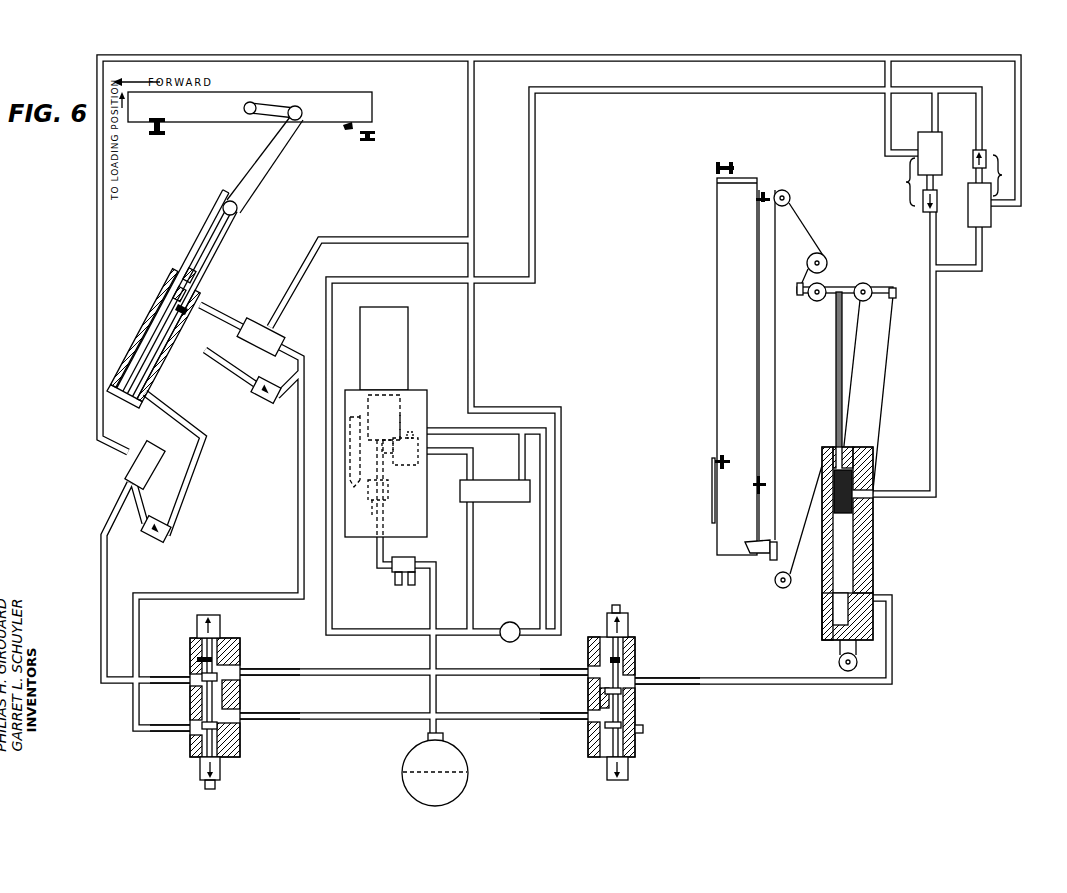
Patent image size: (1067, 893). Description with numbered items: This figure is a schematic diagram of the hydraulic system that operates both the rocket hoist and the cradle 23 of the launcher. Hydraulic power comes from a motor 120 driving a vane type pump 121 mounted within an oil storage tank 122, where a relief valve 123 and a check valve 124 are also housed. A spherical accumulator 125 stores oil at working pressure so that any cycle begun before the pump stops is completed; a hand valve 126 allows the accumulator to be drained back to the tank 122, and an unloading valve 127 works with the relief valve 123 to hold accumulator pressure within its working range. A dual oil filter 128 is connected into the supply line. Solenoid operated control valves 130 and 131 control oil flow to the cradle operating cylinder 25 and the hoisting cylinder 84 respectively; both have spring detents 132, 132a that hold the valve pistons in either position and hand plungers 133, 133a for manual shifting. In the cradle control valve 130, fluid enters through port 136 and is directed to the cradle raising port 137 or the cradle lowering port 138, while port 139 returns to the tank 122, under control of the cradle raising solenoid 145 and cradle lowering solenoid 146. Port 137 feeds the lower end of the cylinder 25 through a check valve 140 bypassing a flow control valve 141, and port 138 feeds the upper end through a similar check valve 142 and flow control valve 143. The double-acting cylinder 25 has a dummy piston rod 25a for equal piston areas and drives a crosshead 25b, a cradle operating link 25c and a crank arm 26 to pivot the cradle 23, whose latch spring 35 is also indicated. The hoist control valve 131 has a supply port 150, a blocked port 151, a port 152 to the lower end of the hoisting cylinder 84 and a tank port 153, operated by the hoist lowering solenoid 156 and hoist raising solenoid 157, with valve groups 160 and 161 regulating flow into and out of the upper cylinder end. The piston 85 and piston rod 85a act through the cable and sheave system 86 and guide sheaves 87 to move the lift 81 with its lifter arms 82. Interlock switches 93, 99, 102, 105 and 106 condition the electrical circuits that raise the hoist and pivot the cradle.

The cradle 23 is at (345, 102).
The cradle operating cylinder 25 is at (172, 276).
The dummy piston rod 25a is at (162, 312).
The crosshead 25b is at (222, 209).
The cradle operating link 25c is at (244, 178).
The crank arm 26 is at (270, 120).
The spring 35 is at (375, 142).
The lift 81 is at (771, 560).
The lifter arms 82 is at (748, 550).
The hoisting cylinder 84 is at (826, 527).
The piston 85 is at (836, 496).
The piston rod 85a is at (836, 405).
The cable and sheave system 86 is at (846, 284).
The guide sheaves 87 is at (791, 195).
The interlock switch 93 is at (722, 455).
The switch 99 is at (765, 482).
The switch 102 is at (765, 194).
The switch 105 is at (735, 164).
The switch 106 is at (718, 160).
The motor 120 is at (397, 342).
The vane type pump 121 is at (400, 413).
The oil storage tank 122 is at (416, 412).
The relief valve 123 is at (414, 463).
The check valve 124 is at (370, 510).
The accumulator 125 is at (452, 762).
The hand valve 126 is at (514, 622).
The unloading valve 127 is at (467, 496).
The dual oil filter 128 is at (392, 570).
The cradle control valve 130 is at (197, 752).
The hoist control valve 131 is at (638, 752).
The spring detent 132 is at (200, 656).
The spring detent 132a is at (628, 660).
The hand plunger 133 is at (216, 784).
The hand plunger 133a is at (620, 608).
The port 136 is at (243, 718).
The cradle raising port 137 is at (190, 684).
The cradle lowering port 138 is at (190, 733).
The port 139 is at (242, 670).
The check valve 140 is at (170, 535).
The flow control valve 141 is at (125, 466).
The check valve 142 is at (262, 400).
The flow control valve 143 is at (260, 328).
The cradle raising solenoid 145 is at (222, 625).
The cradle lowering solenoid 146 is at (222, 762).
The port 150 is at (586, 715).
The port 151 is at (643, 729).
The port 152 is at (640, 684).
The port 153 is at (578, 672).
The hoist lowering solenoid 156 is at (630, 627).
The hoist raising solenoid 157 is at (630, 773).
The flow controlling valve and check valve combination 160 is at (906, 182).
The flow controlling valve and check valve combination 161 is at (1002, 175).